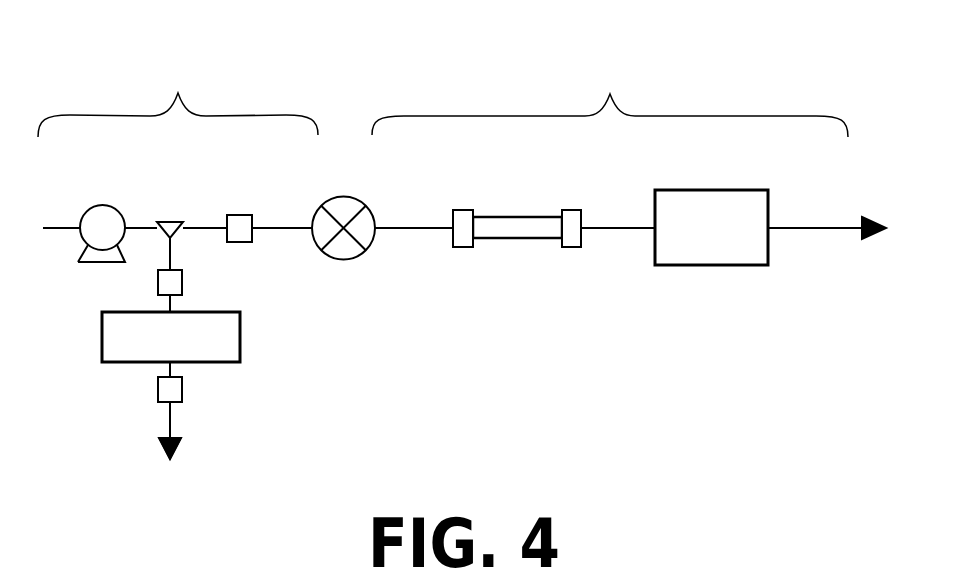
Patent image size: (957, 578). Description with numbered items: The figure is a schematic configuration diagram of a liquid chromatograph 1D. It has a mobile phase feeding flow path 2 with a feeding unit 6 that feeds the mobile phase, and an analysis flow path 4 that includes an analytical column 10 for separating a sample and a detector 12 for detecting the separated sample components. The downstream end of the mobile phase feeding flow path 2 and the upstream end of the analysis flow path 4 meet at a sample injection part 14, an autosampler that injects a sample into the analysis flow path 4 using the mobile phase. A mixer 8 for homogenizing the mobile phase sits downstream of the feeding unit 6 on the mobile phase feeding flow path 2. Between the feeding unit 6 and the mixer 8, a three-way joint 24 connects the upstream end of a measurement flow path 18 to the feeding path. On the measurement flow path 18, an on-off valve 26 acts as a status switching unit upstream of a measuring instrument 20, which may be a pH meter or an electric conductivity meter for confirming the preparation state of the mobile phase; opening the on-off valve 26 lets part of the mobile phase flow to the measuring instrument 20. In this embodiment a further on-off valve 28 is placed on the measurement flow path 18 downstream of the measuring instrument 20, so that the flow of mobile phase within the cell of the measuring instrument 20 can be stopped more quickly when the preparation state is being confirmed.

The liquid chromatograph 1D is at (75, 40).
The mobile phase feeding flow path 2 is at (178, 98).
The analysis flow path 4 is at (610, 98).
The feeding unit 6 is at (117, 207).
The mixer 8 is at (252, 215).
The analytical column 10 is at (523, 216).
The detector 12 is at (768, 199).
The sample injection part 14 is at (341, 198).
The measurement flow path 18 is at (168, 413).
The measuring instrument 20 is at (240, 322).
The three-way joint 24 is at (176, 222).
The on-off valve 26 is at (183, 281).
The on-off valve 28 is at (183, 388).